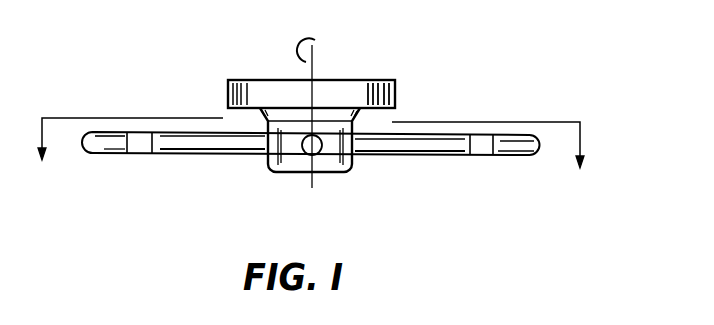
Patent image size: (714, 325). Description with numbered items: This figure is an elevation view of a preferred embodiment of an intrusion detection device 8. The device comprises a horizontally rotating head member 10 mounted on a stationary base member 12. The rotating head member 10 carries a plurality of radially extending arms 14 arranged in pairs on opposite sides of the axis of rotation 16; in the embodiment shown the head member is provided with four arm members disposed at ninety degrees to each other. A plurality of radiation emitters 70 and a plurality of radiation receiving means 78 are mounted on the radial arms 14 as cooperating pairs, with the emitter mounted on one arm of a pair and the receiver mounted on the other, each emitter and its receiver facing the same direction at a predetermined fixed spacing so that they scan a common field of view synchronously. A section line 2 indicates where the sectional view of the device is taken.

The section line 2- 2 is at (311, 156).
The drug delivery device 8 is at (407, 93).
The rotating head member 10 is at (290, 160).
The stationary base member 12 is at (398, 105).
The radially extending arms 14 is at (220, 153).
The axis of rotation 16 is at (328, 42).
The radiation emitters 70 is at (150, 149).
The radiation receiving means 78 is at (480, 146).